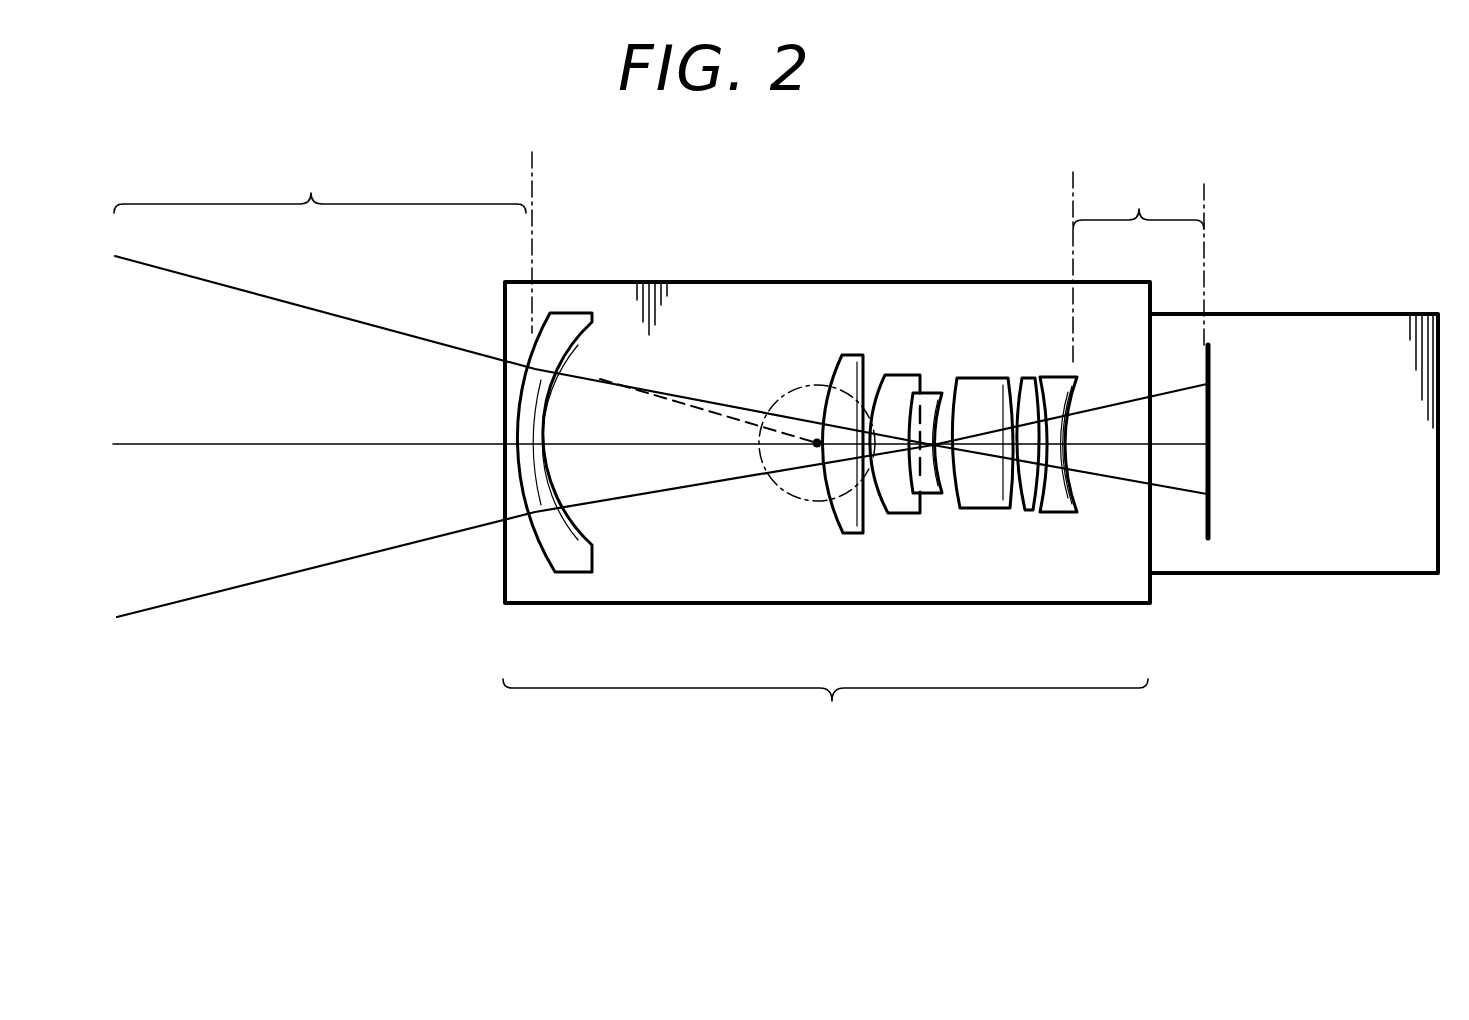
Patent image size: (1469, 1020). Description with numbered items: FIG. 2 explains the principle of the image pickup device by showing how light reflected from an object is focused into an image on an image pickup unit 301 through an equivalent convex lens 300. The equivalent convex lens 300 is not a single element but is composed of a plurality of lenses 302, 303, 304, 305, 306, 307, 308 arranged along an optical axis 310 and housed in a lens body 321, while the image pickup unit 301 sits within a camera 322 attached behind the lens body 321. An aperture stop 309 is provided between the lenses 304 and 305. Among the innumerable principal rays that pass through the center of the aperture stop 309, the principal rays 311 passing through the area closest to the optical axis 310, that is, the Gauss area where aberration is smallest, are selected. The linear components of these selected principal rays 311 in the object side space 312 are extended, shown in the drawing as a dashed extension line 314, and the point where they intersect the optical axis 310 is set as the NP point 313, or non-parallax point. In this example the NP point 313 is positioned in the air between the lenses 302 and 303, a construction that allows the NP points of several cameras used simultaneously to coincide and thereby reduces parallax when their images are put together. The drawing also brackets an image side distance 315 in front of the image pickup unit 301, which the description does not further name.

The equivalent convex lens 300 is at (825, 712).
The image pickup unit 301 is at (1213, 528).
The lens 302 is at (573, 558).
The lens 303 is at (843, 512).
The lens 304 is at (893, 503).
The lens 305 is at (935, 497).
The lens 306 is at (986, 494).
The lens 307 is at (1028, 503).
The lens 308 is at (1060, 500).
The aperture stop 309 is at (918, 415).
The optical axis 310 is at (233, 443).
The principal rays 311 is at (300, 307).
The object side space 312 is at (323, 242).
The NP point 313 is at (816, 438).
The chief ray 314 is at (774, 401).
The back focal distance 315 is at (1138, 267).
The lens body 321 is at (745, 282).
The camera 322 is at (1341, 314).